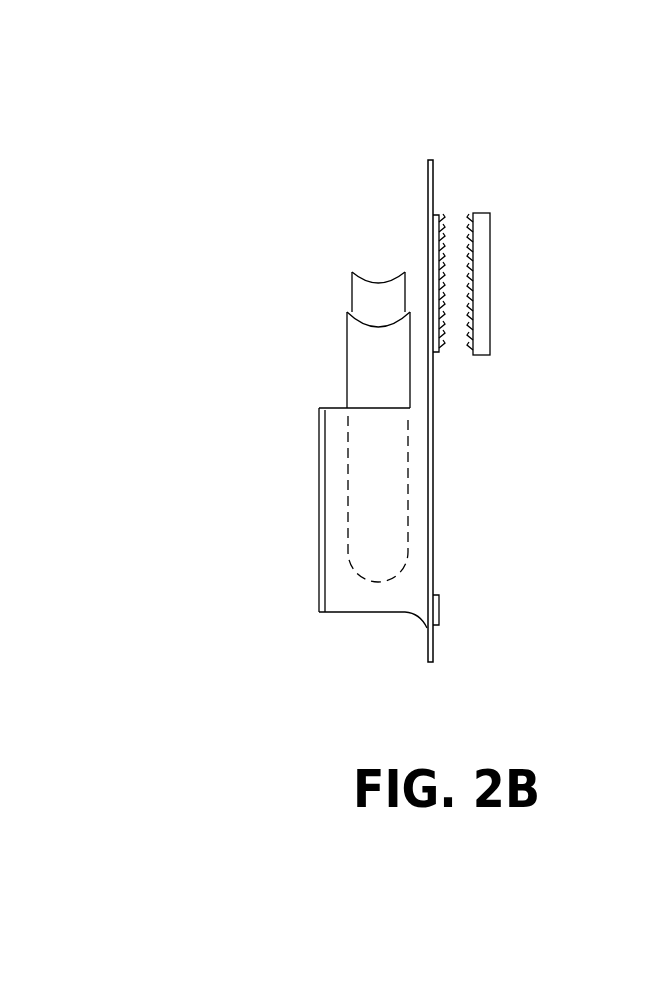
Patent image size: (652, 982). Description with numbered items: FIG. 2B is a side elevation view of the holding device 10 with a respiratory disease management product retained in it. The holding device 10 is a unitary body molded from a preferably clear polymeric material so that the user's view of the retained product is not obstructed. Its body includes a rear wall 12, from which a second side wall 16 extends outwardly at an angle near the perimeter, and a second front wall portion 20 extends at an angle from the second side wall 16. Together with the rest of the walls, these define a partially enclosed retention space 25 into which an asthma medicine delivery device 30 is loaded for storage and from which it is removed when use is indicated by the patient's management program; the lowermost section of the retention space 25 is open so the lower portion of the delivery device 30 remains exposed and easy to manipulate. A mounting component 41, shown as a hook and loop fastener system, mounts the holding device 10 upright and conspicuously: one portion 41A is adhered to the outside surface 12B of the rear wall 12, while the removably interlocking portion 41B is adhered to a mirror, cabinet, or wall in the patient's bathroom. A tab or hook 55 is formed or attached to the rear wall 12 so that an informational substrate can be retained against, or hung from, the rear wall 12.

The holding device 10 is at (565, 168).
The rear wall 12 is at (427, 159).
The outside surface of rear wall 12B is at (433, 498).
The second side wall 16 is at (333, 407).
The second front wall portion 20 is at (318, 562).
The retention space 25 is at (310, 359).
The asthma medicine delivery device 30 is at (379, 282).
The mounting component 41 is at (461, 199).
The one portion of mounting component 41A is at (436, 352).
The removably interlocking portion of mounting component 41B is at (483, 355).
The tab or hook 55 is at (439, 610).